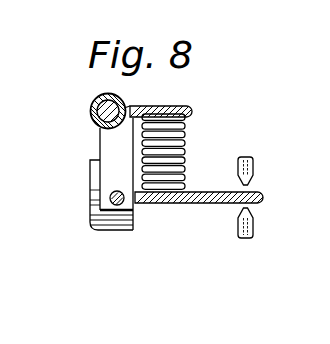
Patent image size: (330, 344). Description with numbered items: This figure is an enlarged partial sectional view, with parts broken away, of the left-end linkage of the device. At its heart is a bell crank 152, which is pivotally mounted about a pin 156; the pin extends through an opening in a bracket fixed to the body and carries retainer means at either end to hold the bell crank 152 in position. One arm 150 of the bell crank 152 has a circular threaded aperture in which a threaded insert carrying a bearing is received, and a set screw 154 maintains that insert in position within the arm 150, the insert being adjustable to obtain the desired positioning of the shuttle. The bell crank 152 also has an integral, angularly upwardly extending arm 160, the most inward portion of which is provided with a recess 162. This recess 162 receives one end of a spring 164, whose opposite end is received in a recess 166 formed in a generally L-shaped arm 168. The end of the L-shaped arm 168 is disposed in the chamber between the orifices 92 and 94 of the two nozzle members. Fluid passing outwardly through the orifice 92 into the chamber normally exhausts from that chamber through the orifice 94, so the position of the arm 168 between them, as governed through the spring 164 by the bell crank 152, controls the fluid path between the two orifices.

The orifice 92 is at (255, 178).
The orifice 94 is at (255, 215).
The arm 150 is at (106, 181).
The bell crank 152 is at (98, 145).
The set screw 154 is at (117, 205).
The pin 156 is at (91, 109).
The arm 160 is at (163, 112).
The recess 162 is at (188, 121).
The spring 164 is at (186, 152).
The recess 166 is at (167, 196).
The L-shaped arm 168 is at (264, 198).